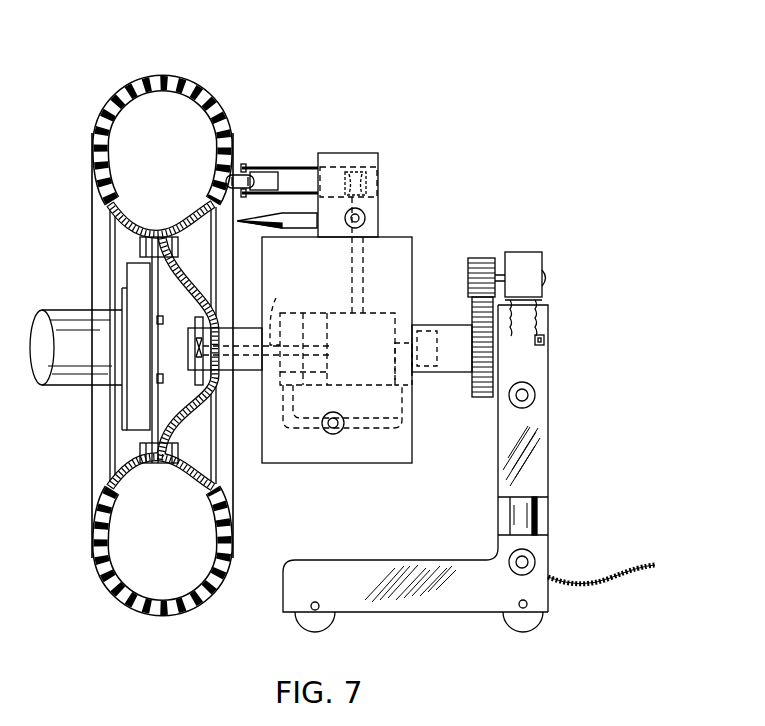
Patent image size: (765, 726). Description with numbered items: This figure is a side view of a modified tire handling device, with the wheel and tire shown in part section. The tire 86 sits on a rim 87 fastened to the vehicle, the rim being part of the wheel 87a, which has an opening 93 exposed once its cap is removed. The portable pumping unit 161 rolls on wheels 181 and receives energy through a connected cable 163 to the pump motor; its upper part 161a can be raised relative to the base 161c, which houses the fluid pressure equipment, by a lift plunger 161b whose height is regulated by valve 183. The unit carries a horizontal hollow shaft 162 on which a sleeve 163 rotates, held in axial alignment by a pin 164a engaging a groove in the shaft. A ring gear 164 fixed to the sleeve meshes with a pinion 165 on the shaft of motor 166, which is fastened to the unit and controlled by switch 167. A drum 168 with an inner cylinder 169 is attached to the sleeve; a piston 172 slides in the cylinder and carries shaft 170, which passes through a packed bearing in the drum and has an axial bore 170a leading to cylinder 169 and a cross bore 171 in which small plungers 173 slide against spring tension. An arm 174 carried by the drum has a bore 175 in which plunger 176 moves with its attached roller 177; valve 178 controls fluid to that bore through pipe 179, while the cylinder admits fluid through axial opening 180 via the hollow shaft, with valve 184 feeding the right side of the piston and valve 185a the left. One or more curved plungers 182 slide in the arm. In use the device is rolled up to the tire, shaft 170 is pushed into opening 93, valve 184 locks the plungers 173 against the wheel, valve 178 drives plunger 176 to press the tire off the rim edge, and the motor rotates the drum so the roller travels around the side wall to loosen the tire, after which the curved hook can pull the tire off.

The tire 86 is at (232, 118).
The rim 87 is at (187, 217).
The wheel 87a is at (150, 260).
The opening 93 is at (218, 326).
The portable pumping unit 161 is at (453, 478).
The upper part 161a is at (548, 465).
The plunger 161b is at (537, 523).
The base 161c is at (422, 608).
The horizontal hollow shaft 162 is at (497, 357).
The sleeve 163 is at (453, 375).
The ring gear 164 is at (482, 403).
The pin 164a is at (436, 324).
The pinion 165 is at (482, 257).
The motor 166 is at (527, 253).
The switch 167 is at (547, 340).
The drum 168 is at (372, 455).
The inner cylinder 169 is at (380, 312).
The shaft 170 is at (253, 484).
The axial bore 170a is at (293, 312).
The cross bore 171 is at (195, 350).
The piston 172 is at (327, 323).
The small plungers 173 is at (197, 316).
The arm 174 is at (378, 225).
The bore 175 is at (360, 174).
The plunger 176 is at (300, 166).
The roller 177 is at (255, 166).
The valve 178 is at (365, 215).
The pipe 179 is at (363, 272).
The axial opening 180 is at (395, 350).
The wheels 181 is at (305, 627).
The tapered or curved plungers 182 is at (253, 228).
The valve 183 is at (537, 560).
The valve 184 is at (537, 400).
The valve 185a is at (333, 434).